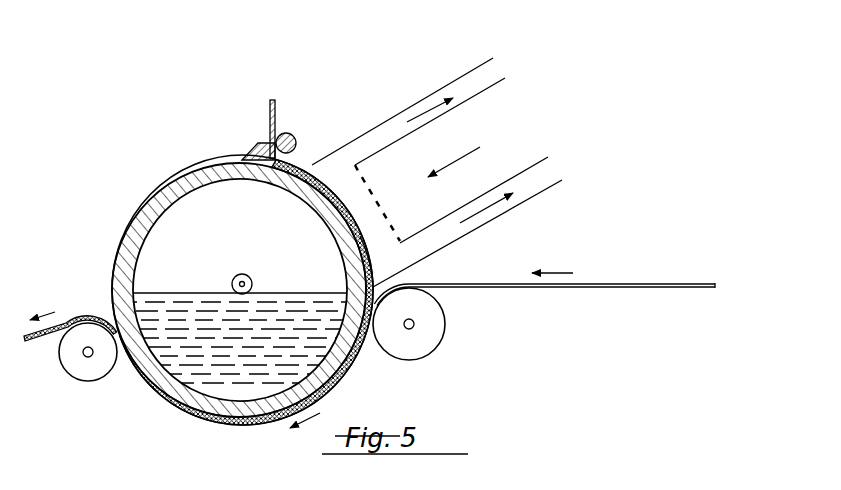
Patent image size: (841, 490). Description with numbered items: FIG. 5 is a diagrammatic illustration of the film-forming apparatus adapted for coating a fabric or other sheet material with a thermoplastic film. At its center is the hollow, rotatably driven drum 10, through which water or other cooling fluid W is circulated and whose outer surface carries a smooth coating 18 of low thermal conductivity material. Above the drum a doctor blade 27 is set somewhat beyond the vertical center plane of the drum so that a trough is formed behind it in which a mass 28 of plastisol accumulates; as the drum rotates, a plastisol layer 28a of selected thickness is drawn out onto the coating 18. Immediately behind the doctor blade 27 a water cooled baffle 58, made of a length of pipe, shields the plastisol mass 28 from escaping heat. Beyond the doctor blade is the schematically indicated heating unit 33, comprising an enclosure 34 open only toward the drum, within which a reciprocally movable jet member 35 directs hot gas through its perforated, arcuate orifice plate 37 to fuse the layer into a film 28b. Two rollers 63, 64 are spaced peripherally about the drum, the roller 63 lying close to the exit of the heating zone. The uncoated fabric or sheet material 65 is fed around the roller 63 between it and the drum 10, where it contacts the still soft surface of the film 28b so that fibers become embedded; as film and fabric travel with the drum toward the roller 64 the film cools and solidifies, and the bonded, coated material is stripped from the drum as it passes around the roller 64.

The drum 10 is at (113, 228).
The coating 18 is at (176, 194).
The doctor blade 27 is at (275, 110).
The mass of plastisol 28 is at (255, 152).
The plastisol layer 28a is at (366, 243).
The film 28b is at (78, 317).
The heating unit 33 is at (530, 203).
The enclosure 34 is at (470, 236).
The jet member 35 is at (511, 180).
The orifice plate 37 is at (376, 196).
The water cooled baffle 58 is at (296, 142).
The roller 63 is at (443, 332).
The roller 64 is at (78, 373).
The fabric or sheet material 65 is at (518, 288).
The cooling fluid W is at (181, 300).